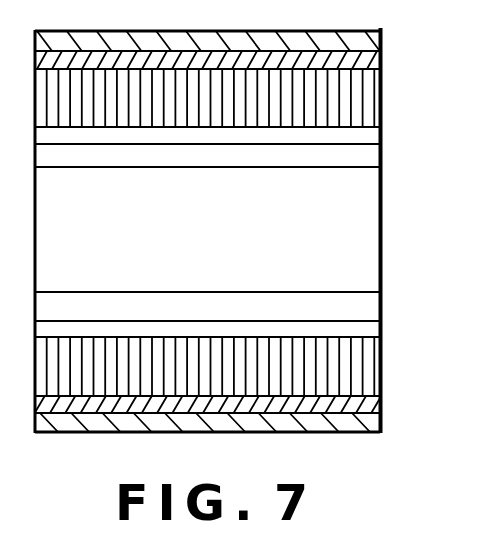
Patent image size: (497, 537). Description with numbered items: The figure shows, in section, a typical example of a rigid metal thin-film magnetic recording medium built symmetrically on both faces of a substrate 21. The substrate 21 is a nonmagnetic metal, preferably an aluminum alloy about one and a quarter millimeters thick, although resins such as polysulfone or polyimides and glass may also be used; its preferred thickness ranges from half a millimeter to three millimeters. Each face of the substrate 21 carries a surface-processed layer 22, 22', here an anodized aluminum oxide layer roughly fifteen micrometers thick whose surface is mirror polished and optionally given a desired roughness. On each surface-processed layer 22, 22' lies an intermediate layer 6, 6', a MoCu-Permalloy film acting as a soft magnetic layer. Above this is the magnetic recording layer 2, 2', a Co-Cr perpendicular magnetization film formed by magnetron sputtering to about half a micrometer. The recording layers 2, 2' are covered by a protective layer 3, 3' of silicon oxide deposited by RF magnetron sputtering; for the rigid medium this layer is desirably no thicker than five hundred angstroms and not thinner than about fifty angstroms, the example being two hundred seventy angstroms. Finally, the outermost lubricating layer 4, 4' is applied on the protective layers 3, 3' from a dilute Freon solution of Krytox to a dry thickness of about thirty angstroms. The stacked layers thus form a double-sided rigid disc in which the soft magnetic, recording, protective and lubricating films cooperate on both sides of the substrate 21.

The lubricating layer 4 is at (246, 36).
The protective layer 3 is at (246, 62).
The magnetic recording layer 2 is at (246, 98).
The intermediate layer 6 is at (246, 134).
The surface-processed layer 22 is at (245, 161).
The substrate 21 is at (367, 225).
The surface-processed layer 22' is at (247, 300).
The intermediate layer 6' is at (249, 324).
The magnetic recording layer 2' is at (249, 366).
The protective layer 3' is at (249, 398).
The lubricating layer 4' is at (249, 425).